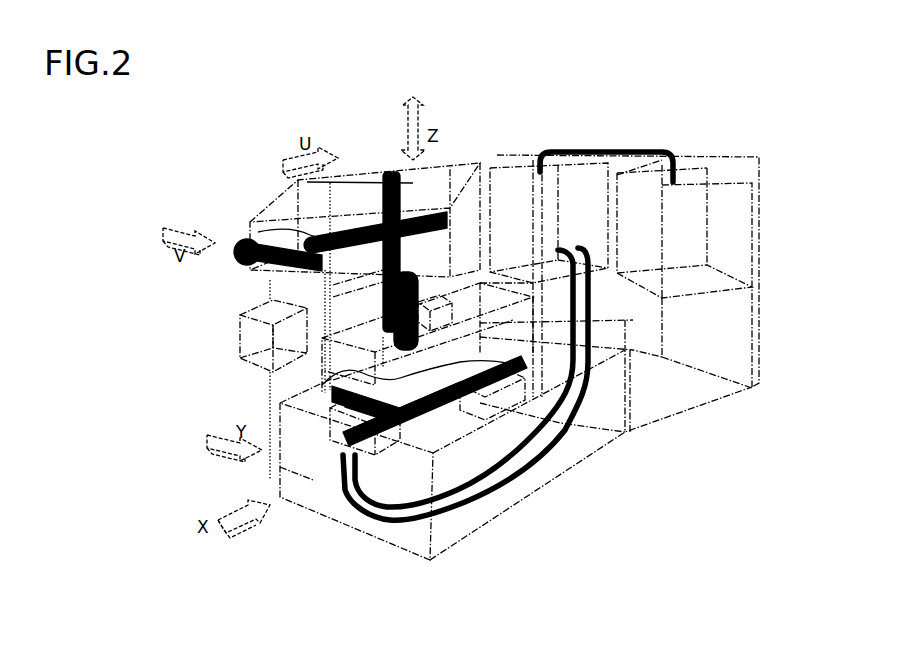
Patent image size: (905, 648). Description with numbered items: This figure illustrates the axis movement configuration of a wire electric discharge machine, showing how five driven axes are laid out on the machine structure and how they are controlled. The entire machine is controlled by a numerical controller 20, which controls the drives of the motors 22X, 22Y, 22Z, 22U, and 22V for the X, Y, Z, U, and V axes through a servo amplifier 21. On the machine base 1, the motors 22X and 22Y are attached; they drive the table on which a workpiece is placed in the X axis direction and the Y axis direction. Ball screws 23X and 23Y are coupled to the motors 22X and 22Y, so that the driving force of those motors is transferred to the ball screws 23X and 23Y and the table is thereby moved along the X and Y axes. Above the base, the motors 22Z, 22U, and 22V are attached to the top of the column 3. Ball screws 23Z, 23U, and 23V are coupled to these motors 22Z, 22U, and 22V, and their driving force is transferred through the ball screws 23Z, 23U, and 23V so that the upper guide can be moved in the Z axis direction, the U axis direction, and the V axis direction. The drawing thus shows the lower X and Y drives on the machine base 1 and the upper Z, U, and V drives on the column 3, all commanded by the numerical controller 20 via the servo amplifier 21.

The machine base 1 is at (485, 511).
The column 3 is at (270, 307).
The numerical controller 20 is at (733, 193).
The servo amplifier 21 is at (508, 172).
The motor for U axis 22U is at (300, 225).
The motor for V axis 22V is at (236, 245).
The motor for X axis 22X is at (375, 440).
The motor for Y axis 22Y is at (333, 407).
The motor for Z axis 22Z is at (388, 175).
The ball screw for U axis 23U is at (362, 175).
The ball screw for V axis 23V is at (300, 240).
The ball screw for X axis 23X is at (480, 393).
The ball screw for Y axis 23Y is at (345, 455).
The ball screw for Z axis 23Z is at (415, 215).